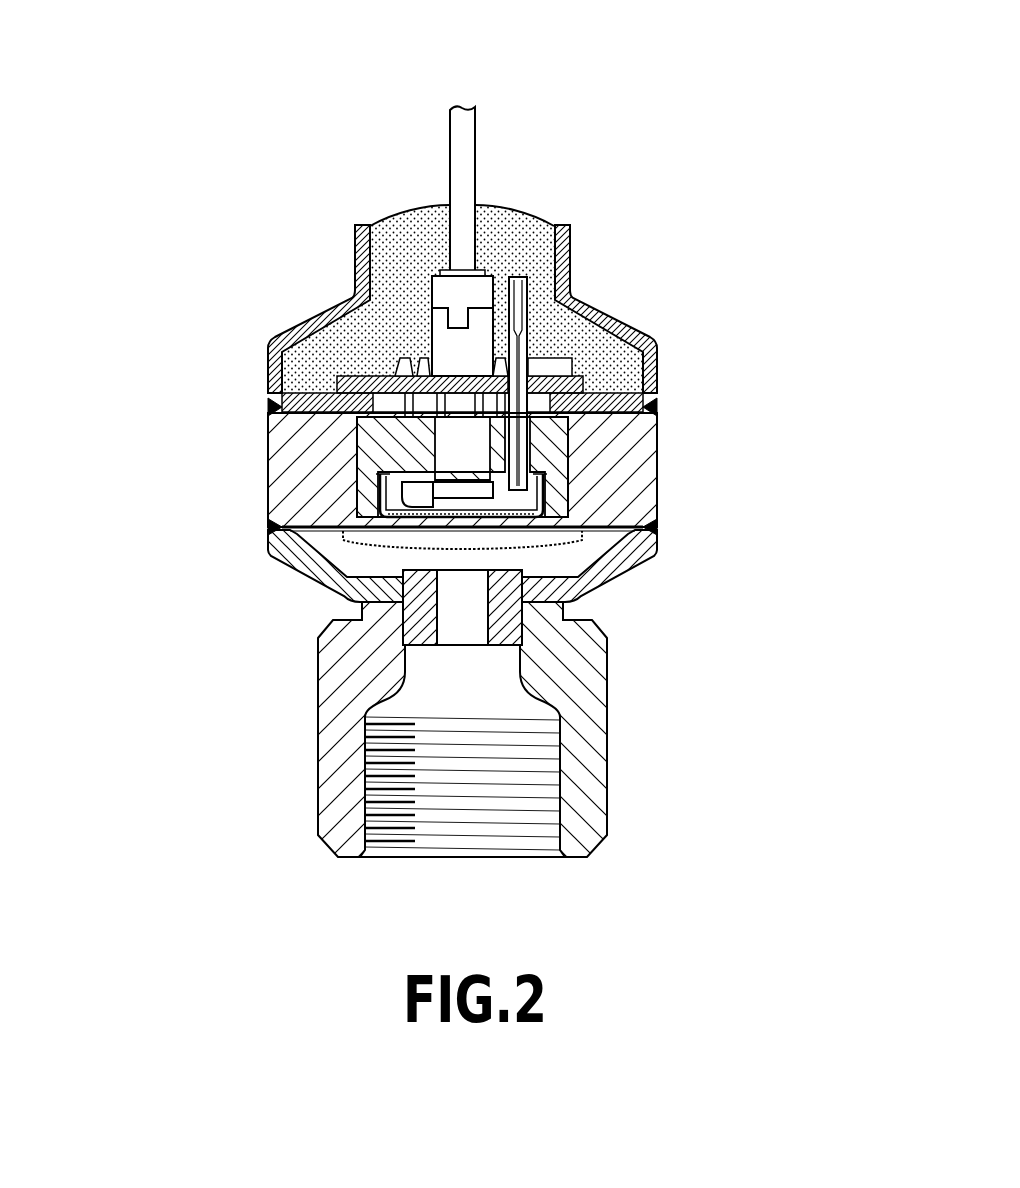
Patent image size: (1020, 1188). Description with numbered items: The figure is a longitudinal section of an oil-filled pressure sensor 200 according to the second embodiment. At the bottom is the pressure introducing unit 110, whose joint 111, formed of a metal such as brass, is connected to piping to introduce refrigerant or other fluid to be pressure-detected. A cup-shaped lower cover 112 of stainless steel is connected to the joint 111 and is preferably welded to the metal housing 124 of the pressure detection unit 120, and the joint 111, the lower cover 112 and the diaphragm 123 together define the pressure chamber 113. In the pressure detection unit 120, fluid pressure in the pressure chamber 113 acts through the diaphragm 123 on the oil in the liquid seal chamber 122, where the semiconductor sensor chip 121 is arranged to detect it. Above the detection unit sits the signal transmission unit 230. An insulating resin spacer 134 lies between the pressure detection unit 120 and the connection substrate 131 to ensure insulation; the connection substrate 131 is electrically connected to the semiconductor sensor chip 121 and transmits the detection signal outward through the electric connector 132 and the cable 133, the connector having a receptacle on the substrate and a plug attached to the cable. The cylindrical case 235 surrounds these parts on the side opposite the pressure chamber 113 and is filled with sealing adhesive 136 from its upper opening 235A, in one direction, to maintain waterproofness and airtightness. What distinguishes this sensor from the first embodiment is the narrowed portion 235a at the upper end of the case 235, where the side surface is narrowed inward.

The pressure sensor 200 is at (627, 103).
The signal transmission unit 230 is at (228, 303).
The case 235 is at (267, 387).
The opening 235A is at (547, 228).
The narrowed portion 235a is at (565, 262).
The sealing adhesive 136 is at (513, 233).
The cable 133 is at (455, 160).
The electric connector 132 is at (445, 357).
The connection substrate 131 is at (585, 383).
The spacer 134 is at (627, 403).
The pressure detection unit 120 is at (228, 453).
The housing 124 is at (627, 440).
The liquid seal chamber 122 is at (530, 502).
The semiconductor sensor chip 121 is at (445, 488).
The diaphragm 123 is at (557, 527).
The pressure introducing unit 110 is at (291, 718).
The pressure chamber 113 is at (378, 558).
The lower cover 112 is at (607, 557).
The joint 111 is at (595, 758).